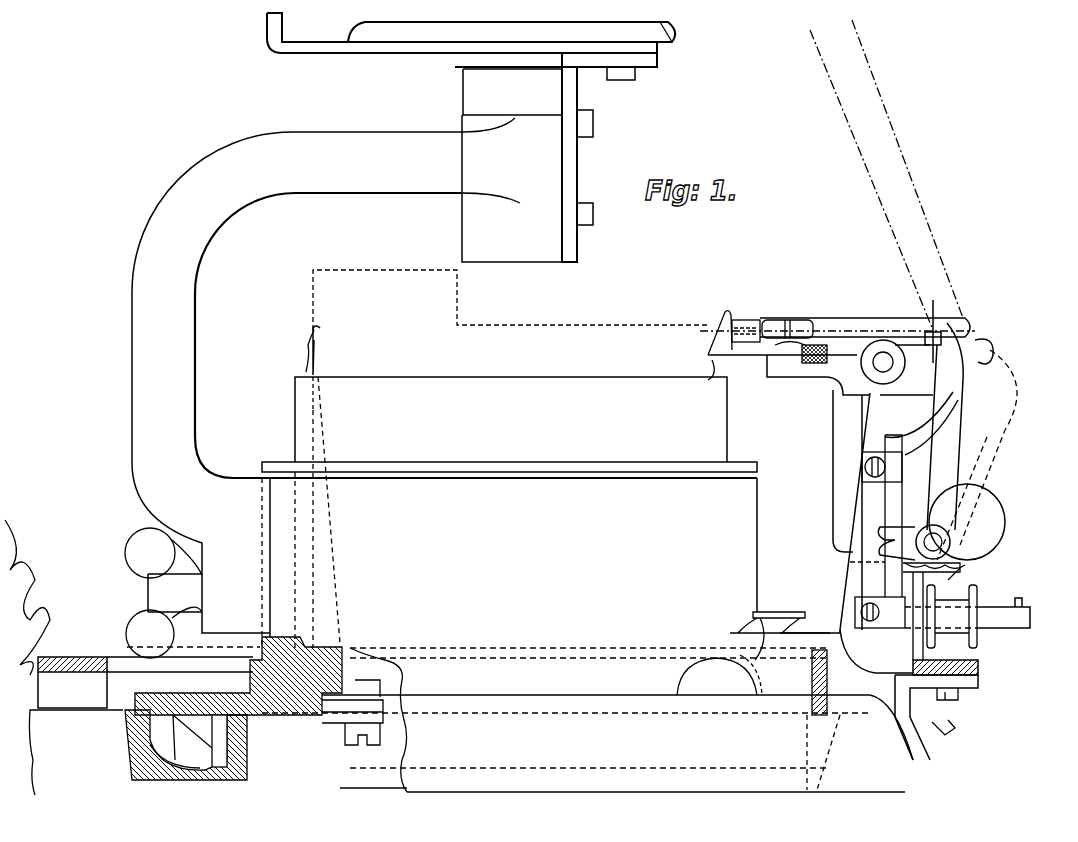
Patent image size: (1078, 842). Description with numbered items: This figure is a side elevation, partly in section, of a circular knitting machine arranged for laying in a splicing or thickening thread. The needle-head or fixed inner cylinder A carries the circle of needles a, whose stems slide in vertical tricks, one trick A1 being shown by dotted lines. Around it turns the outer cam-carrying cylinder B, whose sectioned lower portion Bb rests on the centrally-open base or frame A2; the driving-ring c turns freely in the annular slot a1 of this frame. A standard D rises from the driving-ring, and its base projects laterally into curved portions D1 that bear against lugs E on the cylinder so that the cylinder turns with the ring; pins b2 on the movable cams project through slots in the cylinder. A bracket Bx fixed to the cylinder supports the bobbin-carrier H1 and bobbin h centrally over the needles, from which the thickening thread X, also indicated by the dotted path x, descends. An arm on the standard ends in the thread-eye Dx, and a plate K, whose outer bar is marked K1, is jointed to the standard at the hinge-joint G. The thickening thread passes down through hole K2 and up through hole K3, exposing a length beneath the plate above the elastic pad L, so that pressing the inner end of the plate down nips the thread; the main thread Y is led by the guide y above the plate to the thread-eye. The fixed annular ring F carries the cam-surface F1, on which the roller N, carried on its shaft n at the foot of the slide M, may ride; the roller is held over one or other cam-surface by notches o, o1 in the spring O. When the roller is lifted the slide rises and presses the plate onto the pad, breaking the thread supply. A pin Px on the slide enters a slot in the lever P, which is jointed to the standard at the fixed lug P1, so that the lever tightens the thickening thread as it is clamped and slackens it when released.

The bobbin-carrier H1 is at (471, 137).
The bobbin h is at (668, 16).
The bracket Bx is at (441, 395).
The splicing or thickening thread x is at (326, 275).
The needles a is at (310, 340).
The needle-head or fixed inner cylinder A is at (509, 424).
The trick or groove A1 is at (313, 407).
The outer or cam-carrying cylinder B is at (509, 512).
The cam-carrying cylinder Bb is at (233, 708).
The driving-ring c is at (200, 741).
The annular slot or way a1 is at (175, 755).
The base or frame A2 is at (76, 752).
The fixed annular ring F is at (50, 657).
The cam-surface F1 is at (80, 657).
The lug E is at (717, 676).
The curved portion D1 is at (762, 675).
The pin b2 is at (780, 624).
The looper bar K1 is at (837, 319).
The plate K is at (770, 352).
The thread-eye Dx is at (740, 325).
The hole K3 is at (790, 320).
The hole K2 is at (816, 354).
The pad L is at (815, 365).
The hinge-joint G is at (897, 367).
The standard D is at (870, 531).
The slide M is at (892, 437).
The lever P is at (971, 430).
The guide y is at (983, 336).
The splicing or thickening thread X is at (871, 180).
The main thread Y is at (907, 169).
The spring O is at (971, 522).
The fixed lug P1 is at (950, 542).
The pin Px is at (880, 545).
The notch o is at (935, 577).
The notch o1 is at (954, 579).
The roller N is at (970, 598).
The shaft n is at (1003, 611).